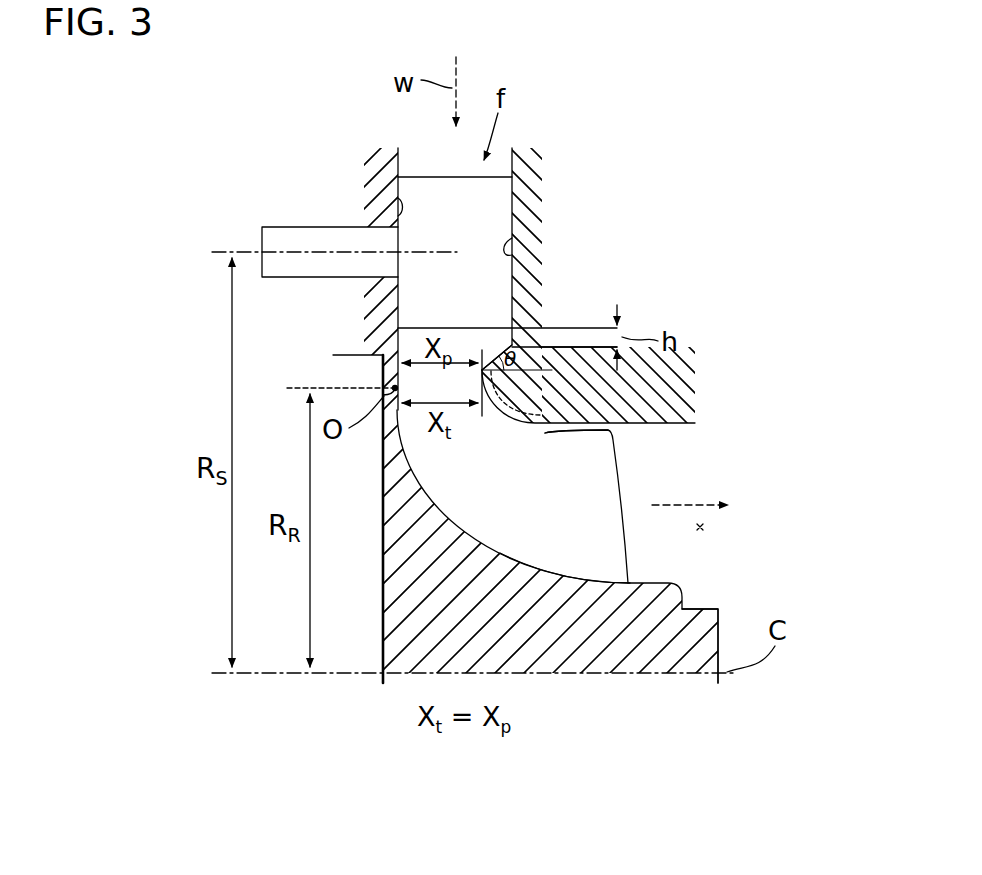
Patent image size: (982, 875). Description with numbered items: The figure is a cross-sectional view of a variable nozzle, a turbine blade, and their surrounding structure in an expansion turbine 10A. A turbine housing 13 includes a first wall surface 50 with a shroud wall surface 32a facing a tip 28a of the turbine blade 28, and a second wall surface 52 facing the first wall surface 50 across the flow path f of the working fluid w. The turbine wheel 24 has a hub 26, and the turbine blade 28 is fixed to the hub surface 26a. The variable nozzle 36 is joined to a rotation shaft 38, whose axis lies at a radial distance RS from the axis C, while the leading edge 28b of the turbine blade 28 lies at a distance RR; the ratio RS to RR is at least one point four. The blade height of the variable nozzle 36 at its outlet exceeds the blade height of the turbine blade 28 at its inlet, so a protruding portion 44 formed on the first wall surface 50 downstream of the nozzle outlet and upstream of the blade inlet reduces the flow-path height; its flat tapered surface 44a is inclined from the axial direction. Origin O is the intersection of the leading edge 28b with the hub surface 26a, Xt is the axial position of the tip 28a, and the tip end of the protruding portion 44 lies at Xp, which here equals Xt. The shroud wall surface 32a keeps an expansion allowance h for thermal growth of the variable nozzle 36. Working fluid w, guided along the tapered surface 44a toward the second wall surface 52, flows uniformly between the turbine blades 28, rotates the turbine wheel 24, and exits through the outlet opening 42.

The expansion turbine 10A is at (662, 270).
The turbine housing 13 is at (550, 194).
The turbine wheel 24 is at (724, 616).
The hub 26 is at (592, 650).
The hub surface 26a is at (582, 575).
The turbine blade 28 is at (583, 490).
The tip 28a is at (612, 418).
The leading edge 28b is at (386, 376).
The shroud wall surface 32a is at (603, 408).
The variable nozzle 36 is at (424, 200).
The rotation shaft 38 is at (285, 232).
The outlet opening 42 is at (702, 527).
The protruding portion 44 is at (500, 386).
The tapered surface 44a is at (527, 318).
The first wall surface 50 is at (535, 243).
The second wall surface 52 is at (398, 200).